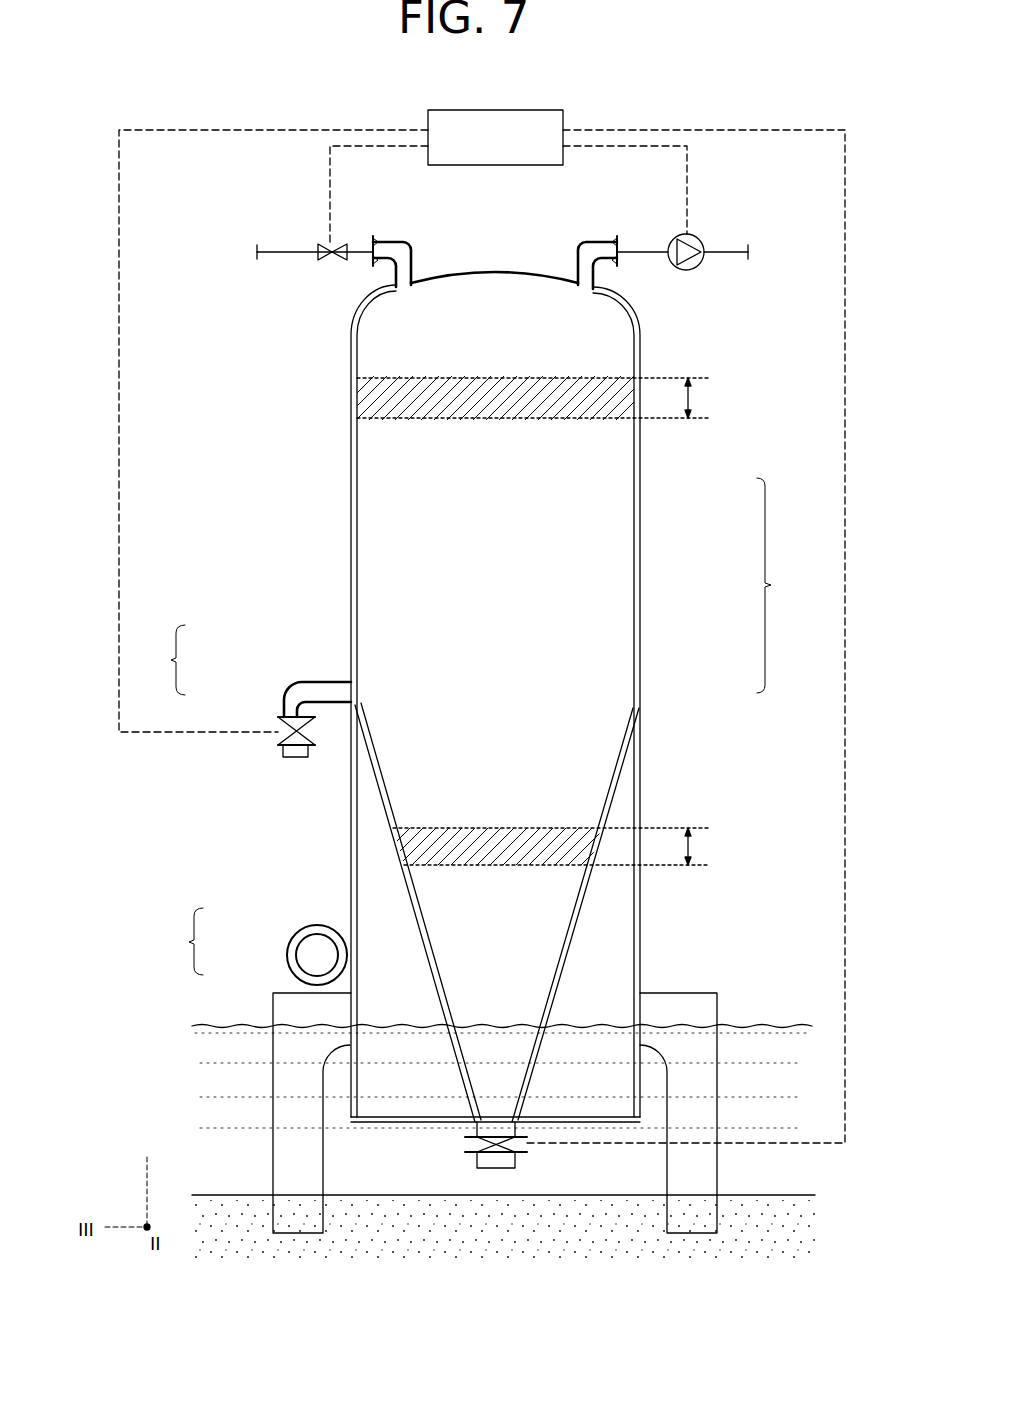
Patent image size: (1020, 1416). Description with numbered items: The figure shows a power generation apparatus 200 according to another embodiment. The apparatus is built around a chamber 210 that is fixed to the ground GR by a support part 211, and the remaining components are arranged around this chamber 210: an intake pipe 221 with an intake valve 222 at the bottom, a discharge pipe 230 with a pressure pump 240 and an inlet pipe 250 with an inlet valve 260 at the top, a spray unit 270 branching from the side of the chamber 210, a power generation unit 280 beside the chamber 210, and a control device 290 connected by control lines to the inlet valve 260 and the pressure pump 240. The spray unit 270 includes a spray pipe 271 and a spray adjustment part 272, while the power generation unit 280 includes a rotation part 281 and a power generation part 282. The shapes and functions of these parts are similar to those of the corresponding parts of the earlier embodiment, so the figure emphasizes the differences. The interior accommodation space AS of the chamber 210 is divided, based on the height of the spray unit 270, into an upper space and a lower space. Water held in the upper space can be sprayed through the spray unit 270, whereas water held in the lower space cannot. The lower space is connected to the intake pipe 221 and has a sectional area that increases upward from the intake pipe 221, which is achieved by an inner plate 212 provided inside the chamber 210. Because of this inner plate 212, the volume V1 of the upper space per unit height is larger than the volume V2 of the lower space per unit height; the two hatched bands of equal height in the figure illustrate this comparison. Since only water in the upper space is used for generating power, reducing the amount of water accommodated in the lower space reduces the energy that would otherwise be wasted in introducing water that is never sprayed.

The power generation apparatus 200 is at (513, 88).
The control device 290 is at (565, 125).
The inlet valve 260 is at (318, 248).
The inlet pipe 250 is at (384, 240).
The discharge pipe 230 is at (600, 240).
The pressure pump 240 is at (699, 240).
The chamber 210 is at (350, 520).
The spray unit 270 is at (240, 687).
The spray pipe 271 is at (312, 682).
The spray adjustment part 272 is at (278, 718).
The inner plate 212 is at (420, 924).
The power generation unit 280 is at (247, 942).
The rotation part 281 is at (306, 927).
The power generation part 282 is at (300, 962).
The support part 211 is at (692, 993).
The intake valve 222 is at (465, 1140).
The intake pipe 221 is at (475, 1166).
The volume of the upper space per unit height V1 is at (598, 382).
The volume of the lower space per unit height V2 is at (565, 830).
The accommodation space AS is at (782, 585).
The ground GR is at (752, 1195).